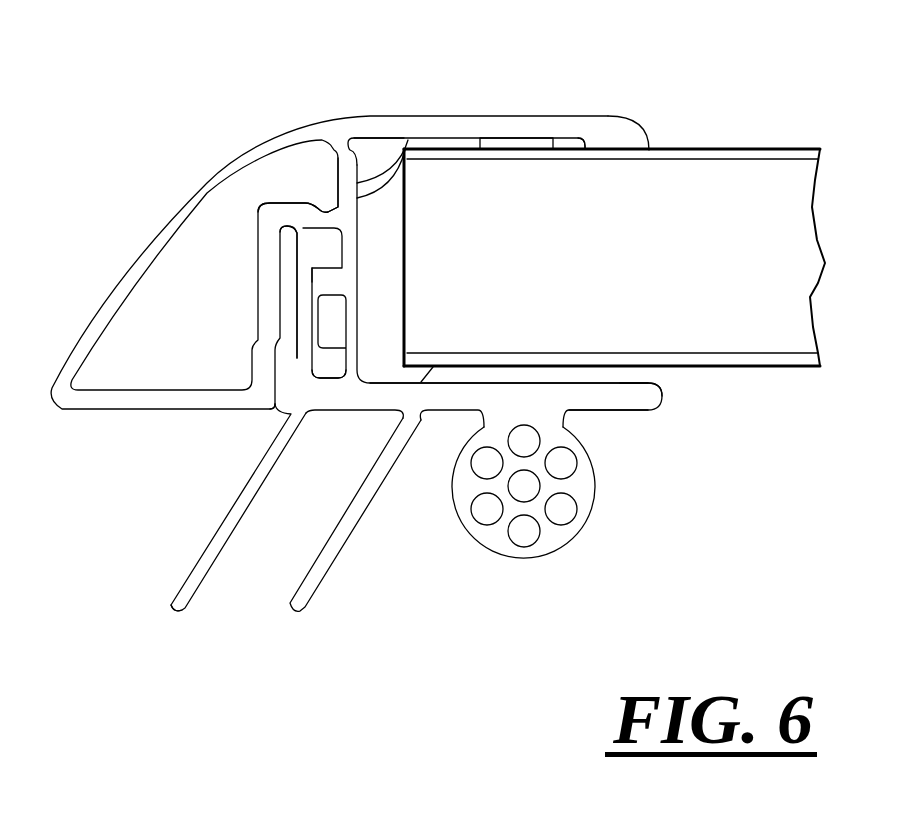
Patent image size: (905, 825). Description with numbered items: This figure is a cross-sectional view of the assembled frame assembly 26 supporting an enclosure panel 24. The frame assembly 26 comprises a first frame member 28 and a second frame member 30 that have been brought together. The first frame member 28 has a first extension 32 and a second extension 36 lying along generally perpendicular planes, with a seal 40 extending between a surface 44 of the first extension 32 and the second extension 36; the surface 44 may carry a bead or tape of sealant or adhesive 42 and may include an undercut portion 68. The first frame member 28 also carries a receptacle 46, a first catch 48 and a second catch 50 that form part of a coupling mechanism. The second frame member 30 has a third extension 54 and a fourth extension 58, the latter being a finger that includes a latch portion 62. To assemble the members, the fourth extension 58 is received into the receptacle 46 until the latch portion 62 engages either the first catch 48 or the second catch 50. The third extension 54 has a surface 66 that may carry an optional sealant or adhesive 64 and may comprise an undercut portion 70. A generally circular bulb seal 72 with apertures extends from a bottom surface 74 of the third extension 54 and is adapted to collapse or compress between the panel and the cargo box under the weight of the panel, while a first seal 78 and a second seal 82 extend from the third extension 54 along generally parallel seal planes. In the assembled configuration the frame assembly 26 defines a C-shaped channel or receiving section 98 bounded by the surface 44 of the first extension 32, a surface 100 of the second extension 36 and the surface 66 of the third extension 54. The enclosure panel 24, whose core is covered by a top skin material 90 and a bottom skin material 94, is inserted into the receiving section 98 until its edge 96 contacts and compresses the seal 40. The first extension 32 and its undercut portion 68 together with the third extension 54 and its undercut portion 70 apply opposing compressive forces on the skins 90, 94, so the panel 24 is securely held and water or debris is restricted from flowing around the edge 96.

The enclosure panel 24 is at (622, 248).
The frame assembly 26 is at (441, 323).
The first frame member 28 is at (170, 178).
The second frame member 30 is at (268, 421).
The first extension 32 is at (611, 128).
The second extension 36 is at (345, 215).
The seal 40 is at (389, 158).
The sealant or adhesive 42 is at (530, 140).
The surface 44 is at (440, 135).
The receptacle 46 is at (335, 270).
The first catch 48 is at (330, 413).
The second catch 50 is at (328, 358).
The third extension 54 is at (617, 395).
The fourth extension 58 is at (307, 308).
The latch portion 62 is at (310, 262).
The sealant or adhesive 64 is at (546, 370).
The surface 66 is at (615, 382).
The undercut portion 68 is at (612, 140).
The undercut portion 70 is at (628, 362).
The bulb seal 72 is at (549, 532).
The bottom surface 74 is at (292, 470).
The first seal 78 is at (300, 593).
The second seal 82 is at (195, 578).
The top skin material 90 is at (743, 148).
The bottom skin material 94 is at (775, 368).
The edge 96 is at (403, 222).
The channel or receiving section 98 is at (376, 372).
The surface 100 is at (362, 254).